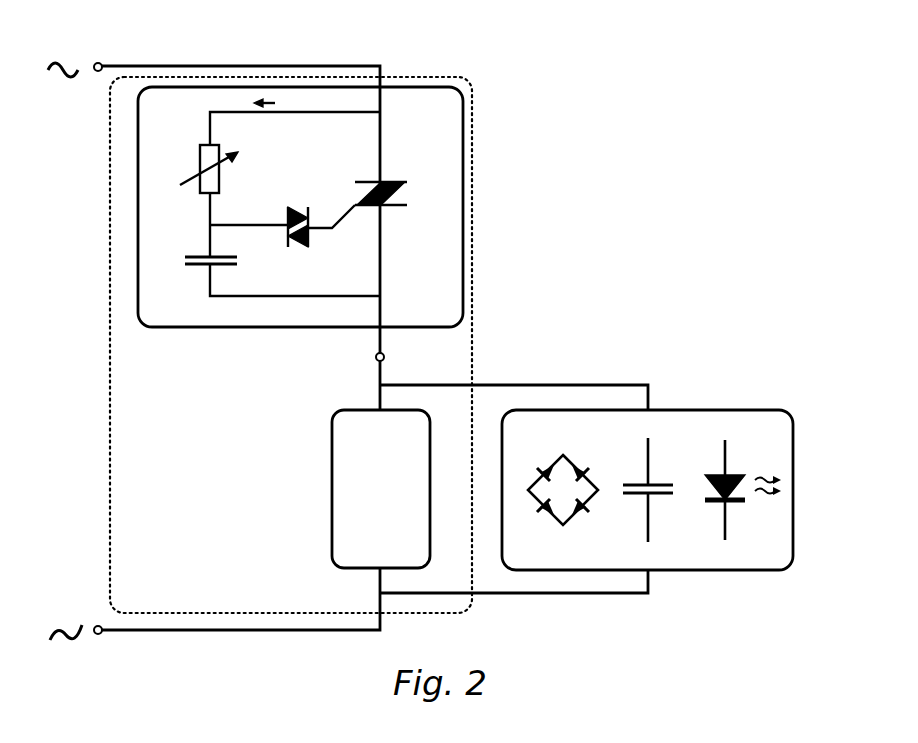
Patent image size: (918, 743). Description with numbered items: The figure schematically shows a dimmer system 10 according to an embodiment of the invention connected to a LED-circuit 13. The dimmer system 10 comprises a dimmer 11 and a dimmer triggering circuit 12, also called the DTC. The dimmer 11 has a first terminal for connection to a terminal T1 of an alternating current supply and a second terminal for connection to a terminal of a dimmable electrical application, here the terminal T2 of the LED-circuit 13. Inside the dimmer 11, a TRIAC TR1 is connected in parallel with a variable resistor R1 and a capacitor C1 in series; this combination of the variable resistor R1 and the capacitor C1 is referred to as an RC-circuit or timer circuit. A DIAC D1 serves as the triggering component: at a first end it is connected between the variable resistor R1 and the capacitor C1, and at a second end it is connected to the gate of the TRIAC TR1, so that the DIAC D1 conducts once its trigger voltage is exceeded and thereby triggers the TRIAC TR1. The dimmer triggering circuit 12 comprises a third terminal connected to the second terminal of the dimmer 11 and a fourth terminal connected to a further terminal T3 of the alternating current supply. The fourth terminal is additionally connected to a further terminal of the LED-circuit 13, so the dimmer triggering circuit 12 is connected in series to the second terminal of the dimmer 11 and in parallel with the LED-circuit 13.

The dimmer system 10 is at (110, 355).
The dimmer 11 is at (300, 233).
The dimmer triggering circuit 12 is at (332, 480).
The LED-circuit 13 is at (795, 413).
The terminal of alternating current supply T1 is at (81, 58).
The terminal of LED-circuit T2 is at (386, 357).
The further terminal of alternating current supply T3 is at (80, 644).
The variable resistor R1 is at (200, 166).
The capacitor C1 is at (200, 247).
The DIAC D1 is at (291, 212).
The TRIAC TR1 is at (394, 180).